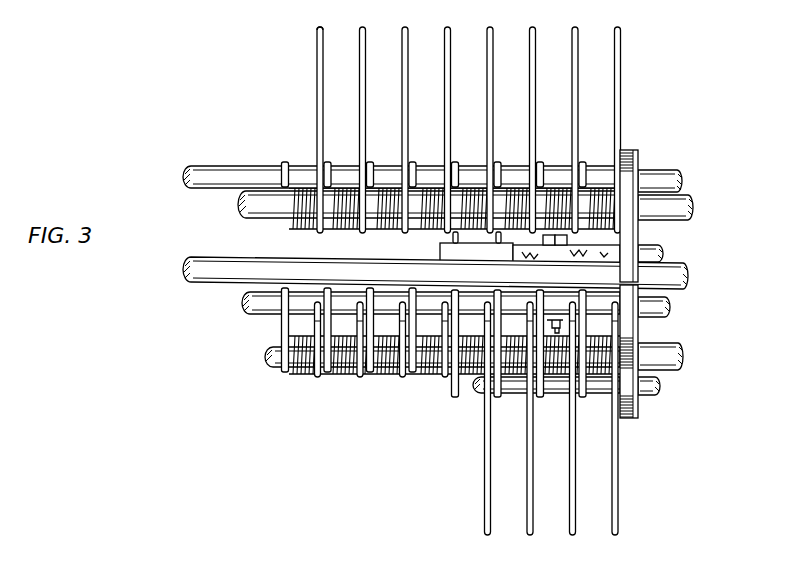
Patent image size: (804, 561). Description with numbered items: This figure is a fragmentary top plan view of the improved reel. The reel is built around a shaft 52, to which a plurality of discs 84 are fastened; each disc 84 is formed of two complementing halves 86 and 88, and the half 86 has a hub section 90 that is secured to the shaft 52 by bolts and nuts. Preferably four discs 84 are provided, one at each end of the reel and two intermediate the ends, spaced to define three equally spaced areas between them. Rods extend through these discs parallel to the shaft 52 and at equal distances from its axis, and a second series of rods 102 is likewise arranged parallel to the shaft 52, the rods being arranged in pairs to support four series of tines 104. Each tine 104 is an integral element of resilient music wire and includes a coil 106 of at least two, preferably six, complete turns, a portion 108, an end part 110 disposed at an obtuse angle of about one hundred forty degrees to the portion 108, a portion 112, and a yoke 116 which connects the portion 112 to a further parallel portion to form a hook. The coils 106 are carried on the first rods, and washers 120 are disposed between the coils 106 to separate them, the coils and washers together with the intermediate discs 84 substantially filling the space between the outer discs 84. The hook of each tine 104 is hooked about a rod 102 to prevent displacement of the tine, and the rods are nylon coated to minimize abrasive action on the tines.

The shaft 52 is at (210, 283).
The disc 84 is at (668, 271).
The disc half 86 is at (626, 204).
The disc half 88 is at (630, 328).
The hub section 90 is at (606, 258).
The rod 102 is at (218, 172).
The tine 104 is at (250, 205).
The coil 106 is at (302, 368).
The portion 108 is at (317, 80).
The end part 110 is at (323, 28).
The portion 112 is at (282, 318).
The yoke 116 is at (286, 164).
The washer 120 is at (400, 378).